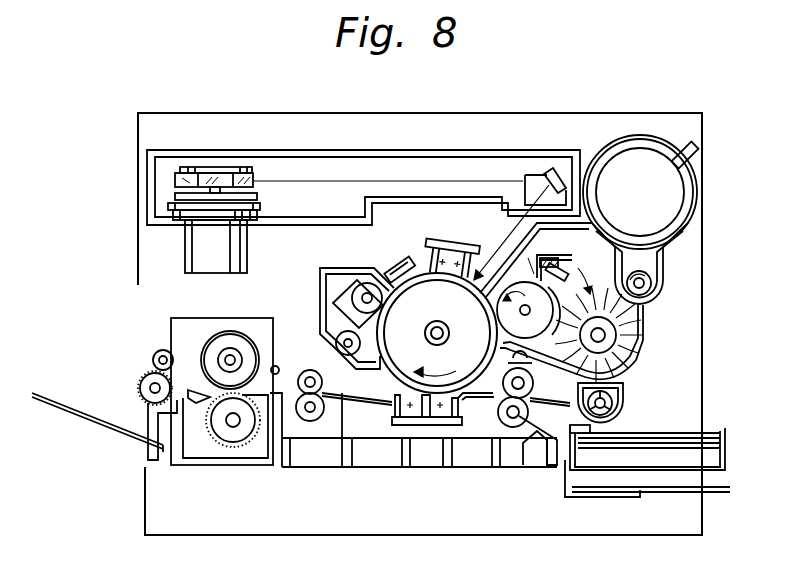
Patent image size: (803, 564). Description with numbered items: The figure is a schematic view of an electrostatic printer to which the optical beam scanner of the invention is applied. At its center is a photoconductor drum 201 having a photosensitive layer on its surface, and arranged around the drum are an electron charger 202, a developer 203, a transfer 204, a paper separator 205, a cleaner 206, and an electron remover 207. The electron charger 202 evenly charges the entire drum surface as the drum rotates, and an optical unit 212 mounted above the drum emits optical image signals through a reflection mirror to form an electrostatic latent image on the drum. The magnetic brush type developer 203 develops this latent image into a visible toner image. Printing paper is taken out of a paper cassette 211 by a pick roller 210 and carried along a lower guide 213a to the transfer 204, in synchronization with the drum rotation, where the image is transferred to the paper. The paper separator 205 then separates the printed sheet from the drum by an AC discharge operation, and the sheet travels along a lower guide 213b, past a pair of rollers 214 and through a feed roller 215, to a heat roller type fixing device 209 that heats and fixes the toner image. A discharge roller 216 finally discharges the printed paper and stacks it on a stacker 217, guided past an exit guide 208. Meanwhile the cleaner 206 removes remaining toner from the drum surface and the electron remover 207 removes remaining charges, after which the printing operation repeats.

The photoconductor drum 201 is at (404, 357).
The electron charger 202 is at (450, 243).
The developer 203 is at (507, 273).
The transfer 204 is at (445, 408).
The paper separator 205 is at (416, 408).
The cleaner 206 is at (350, 282).
The electron remover 207 is at (398, 258).
The paper guide 208 is at (553, 466).
The fixing device 209 is at (181, 466).
The pick roller 210 is at (626, 405).
The paper cassette 211 is at (674, 434).
The optical unit 212 is at (491, 160).
The lower guide 213a is at (484, 402).
The lower guide 213b is at (370, 402).
The registration rollers 214 is at (534, 388).
The feed roller 215 is at (310, 370).
The discharge roller 216 is at (155, 352).
The stacker 217 is at (62, 395).